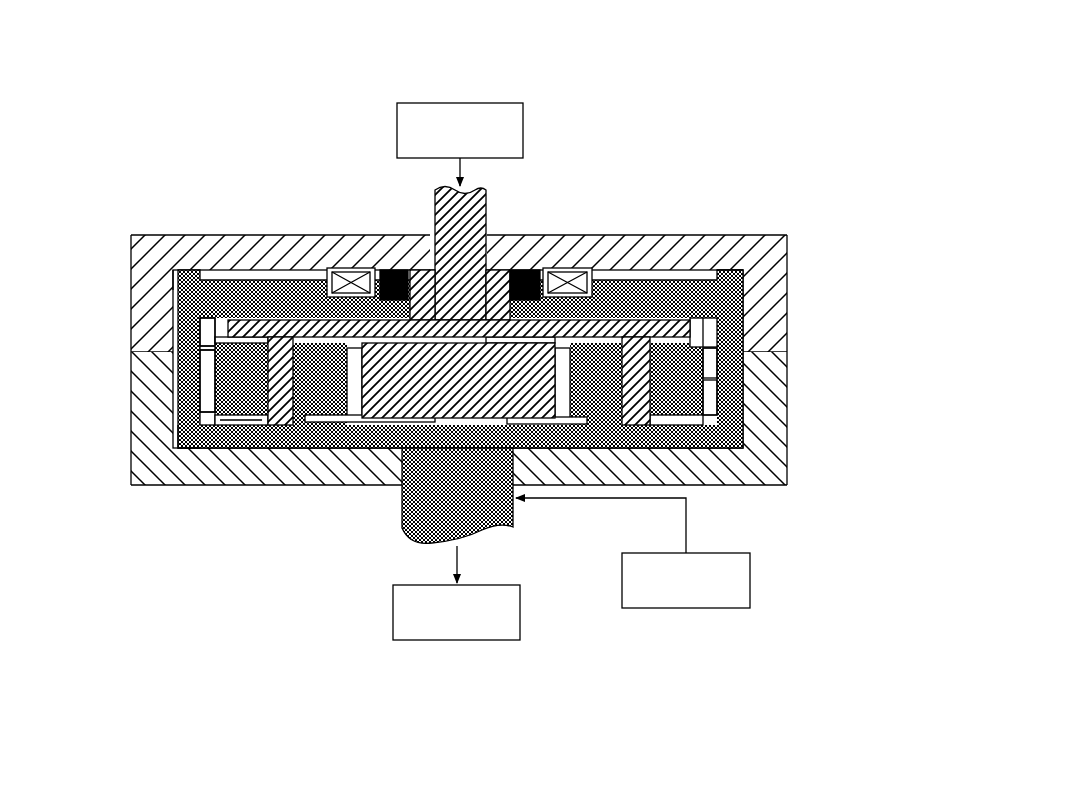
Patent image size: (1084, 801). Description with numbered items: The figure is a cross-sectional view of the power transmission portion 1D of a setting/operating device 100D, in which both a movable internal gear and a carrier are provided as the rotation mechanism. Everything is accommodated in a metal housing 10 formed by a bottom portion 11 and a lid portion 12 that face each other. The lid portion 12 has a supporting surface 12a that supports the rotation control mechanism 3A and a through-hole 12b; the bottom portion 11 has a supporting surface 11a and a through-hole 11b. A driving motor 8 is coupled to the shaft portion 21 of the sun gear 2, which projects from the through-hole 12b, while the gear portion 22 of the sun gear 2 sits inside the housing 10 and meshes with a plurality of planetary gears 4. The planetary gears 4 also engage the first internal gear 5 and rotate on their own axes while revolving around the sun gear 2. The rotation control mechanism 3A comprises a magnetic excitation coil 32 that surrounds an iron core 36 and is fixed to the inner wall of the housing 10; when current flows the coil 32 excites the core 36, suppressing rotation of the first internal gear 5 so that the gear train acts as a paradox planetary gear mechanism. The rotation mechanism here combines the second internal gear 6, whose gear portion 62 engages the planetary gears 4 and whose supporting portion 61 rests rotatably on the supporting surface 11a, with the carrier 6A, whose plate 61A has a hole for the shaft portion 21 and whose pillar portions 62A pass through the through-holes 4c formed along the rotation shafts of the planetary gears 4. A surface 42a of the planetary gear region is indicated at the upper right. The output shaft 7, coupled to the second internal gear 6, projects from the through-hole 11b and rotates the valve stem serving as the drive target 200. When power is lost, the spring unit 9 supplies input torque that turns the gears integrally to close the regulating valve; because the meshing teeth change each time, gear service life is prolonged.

The setting/operating device 100D is at (908, 54).
The power transmission portion 1D is at (802, 168).
The sun gear 2 is at (730, 175).
The shaft portion 21 is at (565, 287).
The gear portion 22 is at (616, 282).
The rotation control mechanism 3A is at (410, 195).
The magnetic excitation coil 32 is at (352, 234).
The iron core 36 is at (392, 234).
The planetary gear 4 is at (776, 320).
The through-hole 4c is at (170, 436).
The mover frame top surface 42a is at (746, 271).
The first internal gear 5 is at (138, 283).
The second internal gear 6 is at (836, 403).
The supporting portion 61 is at (725, 466).
The gear portion 62 is at (750, 418).
The carrier 6A is at (76, 326).
The plate 61A is at (178, 335).
The pillar portion 62A is at (178, 362).
The output shaft 7 is at (402, 510).
The driving motor 8 is at (523, 125).
The spring unit 9 is at (752, 583).
The housing 10 is at (843, 333).
The bottom portion 11 is at (790, 370).
The supporting surface 11a is at (165, 440).
The through-hole 11b is at (402, 489).
The lid portion 12 is at (790, 342).
The supporting surface 12a is at (765, 236).
The through-hole 12b is at (490, 233).
The drive target 200 is at (393, 607).